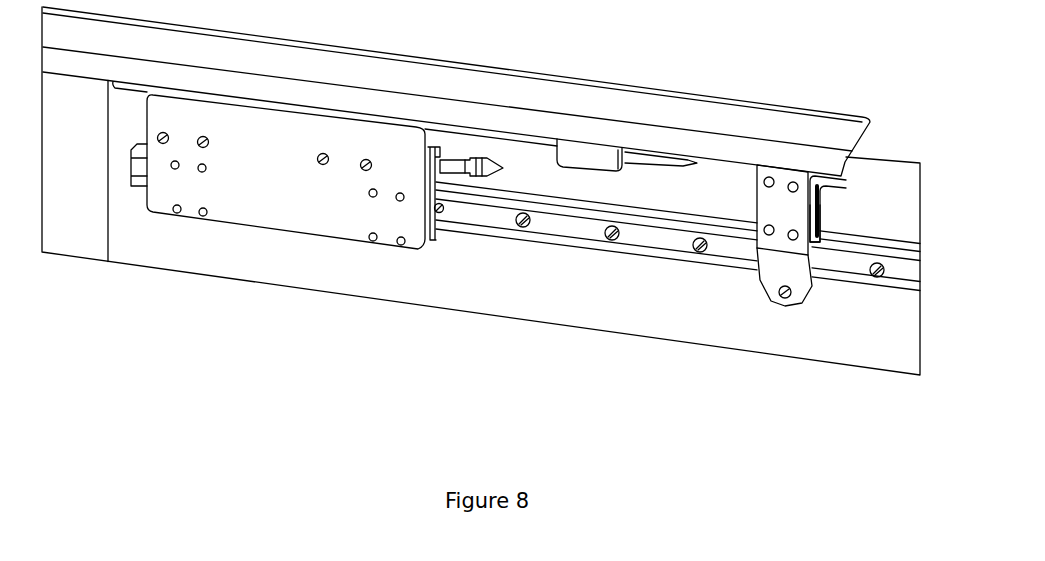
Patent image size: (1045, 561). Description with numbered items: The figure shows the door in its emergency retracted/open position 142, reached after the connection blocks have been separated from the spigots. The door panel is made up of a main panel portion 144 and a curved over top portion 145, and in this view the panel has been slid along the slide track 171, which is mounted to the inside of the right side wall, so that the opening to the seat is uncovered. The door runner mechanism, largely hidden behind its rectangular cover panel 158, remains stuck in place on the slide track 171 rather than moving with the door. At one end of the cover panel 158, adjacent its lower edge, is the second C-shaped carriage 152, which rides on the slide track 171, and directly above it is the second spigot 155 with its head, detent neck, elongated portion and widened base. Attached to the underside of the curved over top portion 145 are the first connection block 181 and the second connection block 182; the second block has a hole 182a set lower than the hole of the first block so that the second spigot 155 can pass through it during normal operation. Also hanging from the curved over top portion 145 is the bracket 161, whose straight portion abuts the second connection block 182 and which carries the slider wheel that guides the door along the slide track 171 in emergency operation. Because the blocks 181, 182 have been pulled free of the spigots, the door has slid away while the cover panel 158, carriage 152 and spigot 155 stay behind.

The open/retracted position 142 is at (74, 302).
The main panel portion 144 is at (78, 222).
The curved over top portion 145 is at (455, 84).
The second C-shaped carriage 152 is at (432, 242).
The second spigot 155 is at (458, 172).
The cover panel 158 is at (272, 219).
The bracket 161 is at (777, 262).
The slide track 171 is at (834, 268).
The first connection block 181 is at (589, 157).
The second connection block 182 is at (822, 190).
The hole 182a is at (822, 216).